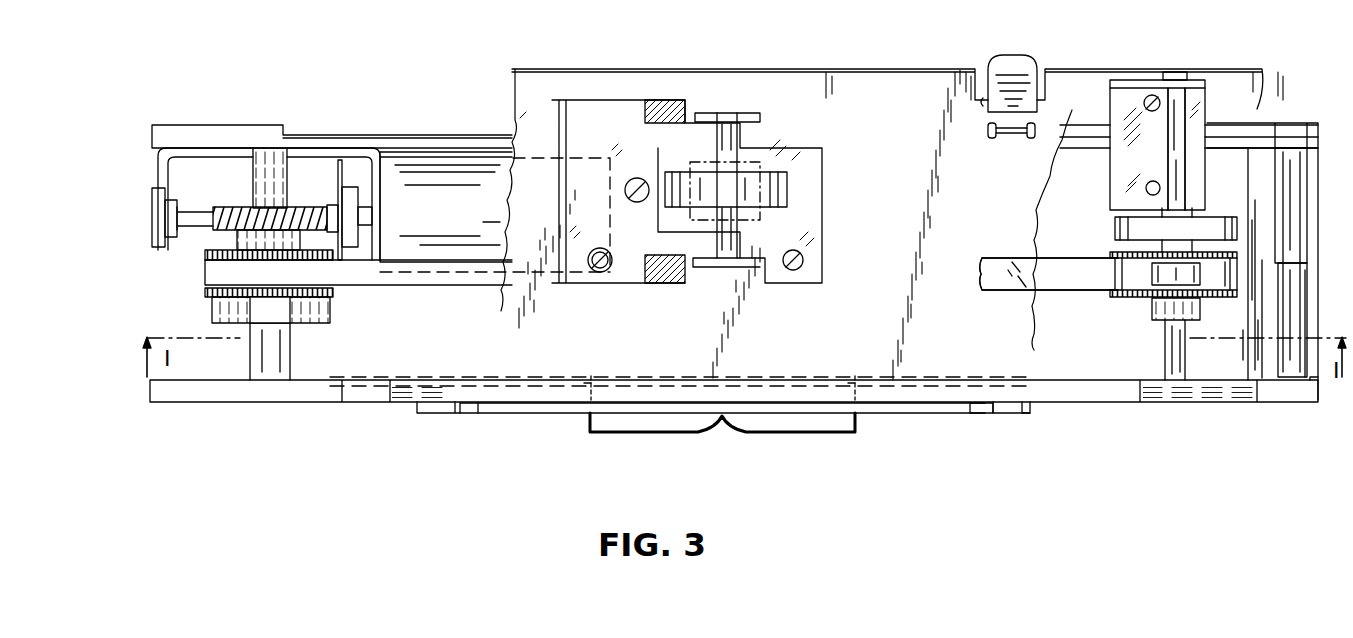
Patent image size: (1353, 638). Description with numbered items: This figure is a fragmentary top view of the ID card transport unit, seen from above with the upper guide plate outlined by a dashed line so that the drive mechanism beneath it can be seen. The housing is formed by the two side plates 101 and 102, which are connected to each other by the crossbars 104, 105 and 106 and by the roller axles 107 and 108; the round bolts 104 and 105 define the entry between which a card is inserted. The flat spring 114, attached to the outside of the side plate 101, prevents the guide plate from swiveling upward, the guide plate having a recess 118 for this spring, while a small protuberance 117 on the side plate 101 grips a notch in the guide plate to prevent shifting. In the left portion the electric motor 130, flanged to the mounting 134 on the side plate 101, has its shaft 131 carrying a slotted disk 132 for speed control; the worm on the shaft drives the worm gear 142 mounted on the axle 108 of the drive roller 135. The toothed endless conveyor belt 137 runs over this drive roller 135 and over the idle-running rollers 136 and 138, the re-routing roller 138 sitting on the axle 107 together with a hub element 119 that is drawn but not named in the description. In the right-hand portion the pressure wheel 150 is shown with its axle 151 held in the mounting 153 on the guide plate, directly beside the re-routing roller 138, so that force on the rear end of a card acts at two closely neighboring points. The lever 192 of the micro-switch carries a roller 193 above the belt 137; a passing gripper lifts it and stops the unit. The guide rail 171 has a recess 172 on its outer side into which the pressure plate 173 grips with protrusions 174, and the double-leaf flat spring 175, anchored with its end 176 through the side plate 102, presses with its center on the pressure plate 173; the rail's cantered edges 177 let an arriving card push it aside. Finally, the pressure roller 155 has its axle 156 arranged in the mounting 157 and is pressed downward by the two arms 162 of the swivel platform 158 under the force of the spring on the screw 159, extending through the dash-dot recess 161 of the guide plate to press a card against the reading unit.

The side plate 101 is at (403, 135).
The side plate 102 is at (1128, 400).
The crossbar 104 is at (1293, 142).
The crossbar 105 is at (1312, 383).
The crossbar 106 is at (1257, 358).
The roller axle 107 is at (1165, 365).
The roller axle 108 is at (279, 348).
The flat spring 114 is at (1017, 63).
The protuberance 117 is at (1008, 138).
The recess 118 is at (983, 104).
The hub 119 is at (1148, 310).
The electric motor 130 is at (441, 221).
The motor shaft 131 is at (372, 208).
The slotted disk 132 is at (338, 178).
The mounting 134 is at (168, 167).
The drive roller 135 is at (211, 250).
The transport roll 136 is at (210, 312).
The endless conveyor belt 137 is at (427, 283).
The re-routing roller 138 is at (1129, 298).
The worm gear 142 is at (245, 206).
The pressure wheel 150 is at (1122, 230).
The axle 151 is at (1173, 160).
The mounting 153 is at (1142, 80).
The pressure roller 155 is at (787, 191).
The axle 156 is at (734, 223).
The mounting 157 is at (805, 233).
The swivel platform 158 is at (612, 100).
The screw 159 is at (629, 178).
The recess 161 is at (763, 163).
The arm 162 is at (678, 127).
The guide rail 171 is at (1025, 413).
The recess 172 is at (460, 408).
The pressure plate 173 is at (893, 413).
The protrusion 174 is at (470, 413).
The flat spring 175 is at (822, 433).
The end 176 is at (586, 376).
The cantered edge 177 is at (455, 380).
The lever 192 is at (998, 262).
The roller 193 is at (1190, 275).